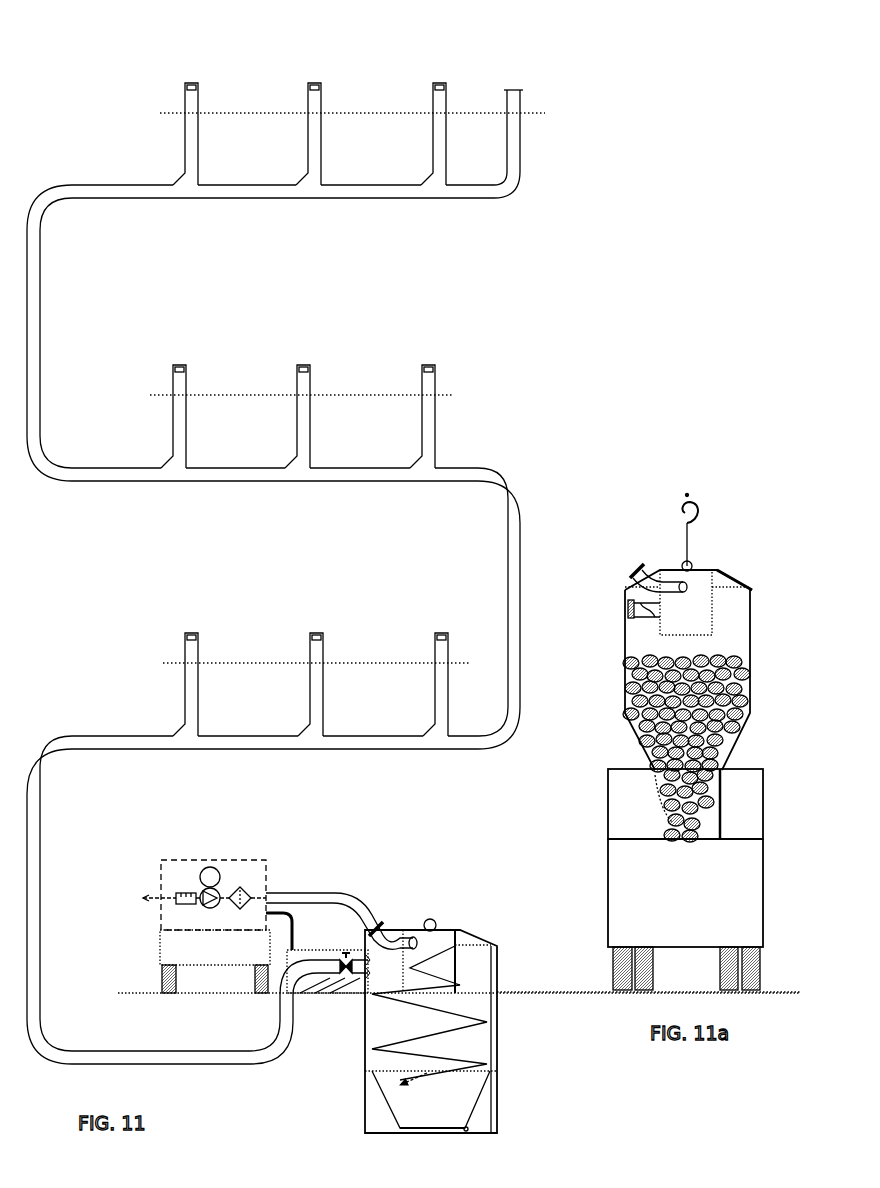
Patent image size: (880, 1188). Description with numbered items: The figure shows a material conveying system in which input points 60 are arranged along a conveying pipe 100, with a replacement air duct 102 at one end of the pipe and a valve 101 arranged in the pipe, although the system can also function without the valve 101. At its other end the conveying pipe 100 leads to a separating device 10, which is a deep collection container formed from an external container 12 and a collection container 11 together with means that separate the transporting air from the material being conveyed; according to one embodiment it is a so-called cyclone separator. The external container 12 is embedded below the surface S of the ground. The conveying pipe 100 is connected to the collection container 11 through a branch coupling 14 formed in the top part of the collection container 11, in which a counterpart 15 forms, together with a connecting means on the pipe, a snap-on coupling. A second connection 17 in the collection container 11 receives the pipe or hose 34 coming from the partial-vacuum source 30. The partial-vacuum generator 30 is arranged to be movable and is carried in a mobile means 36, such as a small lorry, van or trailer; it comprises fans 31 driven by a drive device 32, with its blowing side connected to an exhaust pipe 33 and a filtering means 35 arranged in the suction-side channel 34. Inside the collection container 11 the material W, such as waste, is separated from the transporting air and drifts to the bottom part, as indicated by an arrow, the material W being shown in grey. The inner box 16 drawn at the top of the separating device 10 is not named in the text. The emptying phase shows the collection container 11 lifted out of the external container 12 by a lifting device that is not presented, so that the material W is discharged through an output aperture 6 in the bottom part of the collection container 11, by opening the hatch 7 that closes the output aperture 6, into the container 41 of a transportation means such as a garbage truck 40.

In FIG. 11, the conveying pipe 100 is at (93, 732).
In FIG. 11, the replacement air duct 102 is at (522, 126).
In FIG. 11, the input points 60 is at (186, 80).
In FIG. 11, the surface of the ground S is at (258, 110).
In FIG. 11, the partial-vacuum generator 30 is at (165, 862).
In FIG. 11, the fans 31 is at (204, 888).
In FIG. 11, the drive device 32 is at (210, 866).
In FIG. 11, the exhaust pipe 33 is at (143, 893).
In FIG. 11, the suction-side channel 34 is at (290, 896).
In FIG. 11, the filtering means 35 is at (243, 888).
In FIG. 11, the mobile means 36 is at (150, 972).
In FIG. 11, the second connection 17 is at (374, 927).
In FIG. 11, the inner box / separator 16 is at (392, 938).
In FIG. 11, the separating device 10 is at (452, 917).
In FIG. 11A, the separating device 10 is at (646, 553).
In FIG. 11, the valve 101 is at (344, 974).
In FIG. 11, the counterpart 15 is at (388, 975).
In FIG. 11, the branch coupling 14 is at (368, 1050).
In FIG. 11, the collection container 11 is at (500, 1071).
In FIG. 11A, the collection container 11 is at (625, 642).
In FIG. 11, the external container 12 is at (500, 1113).
In FIG. 11A, the output aperture 6 is at (660, 772).
In FIG. 11A, the hatch 7 is at (722, 797).
In FIG. 11A, the material W is at (714, 837).
In FIG. 11A, the container of a transportation means 41 is at (665, 862).
In FIG. 11A, the garbage truck 40 is at (598, 948).